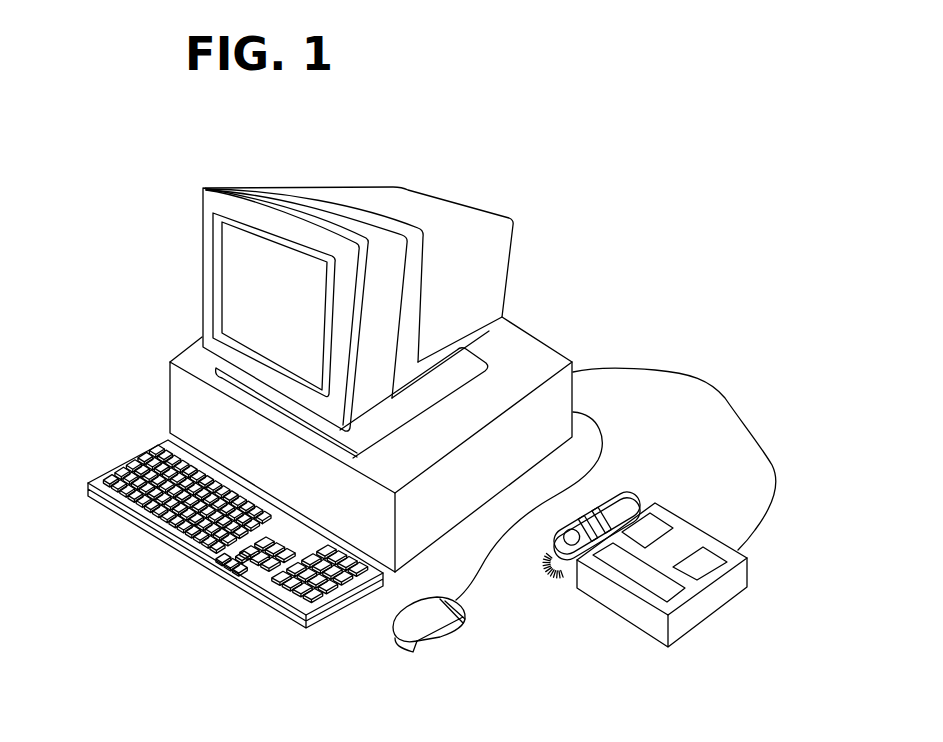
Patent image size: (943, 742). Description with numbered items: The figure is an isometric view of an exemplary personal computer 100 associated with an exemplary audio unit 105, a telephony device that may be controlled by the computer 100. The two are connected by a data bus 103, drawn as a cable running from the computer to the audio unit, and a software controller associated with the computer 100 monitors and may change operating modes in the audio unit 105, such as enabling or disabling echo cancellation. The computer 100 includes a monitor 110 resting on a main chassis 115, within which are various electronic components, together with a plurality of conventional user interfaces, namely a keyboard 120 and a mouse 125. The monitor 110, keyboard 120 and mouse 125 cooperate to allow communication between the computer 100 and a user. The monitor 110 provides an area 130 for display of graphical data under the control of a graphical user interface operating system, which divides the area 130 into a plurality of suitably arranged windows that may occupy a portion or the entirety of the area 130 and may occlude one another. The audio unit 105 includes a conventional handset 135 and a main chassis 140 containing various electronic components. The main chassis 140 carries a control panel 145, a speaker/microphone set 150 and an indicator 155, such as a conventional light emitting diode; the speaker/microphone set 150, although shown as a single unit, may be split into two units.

The computer 100 is at (563, 117).
The data bus 103 is at (680, 370).
The audio unit 105 is at (780, 520).
The monitor 110 is at (413, 197).
The main chassis 115 is at (523, 340).
The keyboard 120 is at (107, 477).
The mouse 125 is at (423, 650).
The area 130 is at (288, 307).
The handset 135 is at (620, 483).
The main chassis 140 is at (703, 623).
The control panel 145 is at (653, 527).
The speaker/microphone set 150 is at (707, 562).
The indicator 155 is at (638, 577).